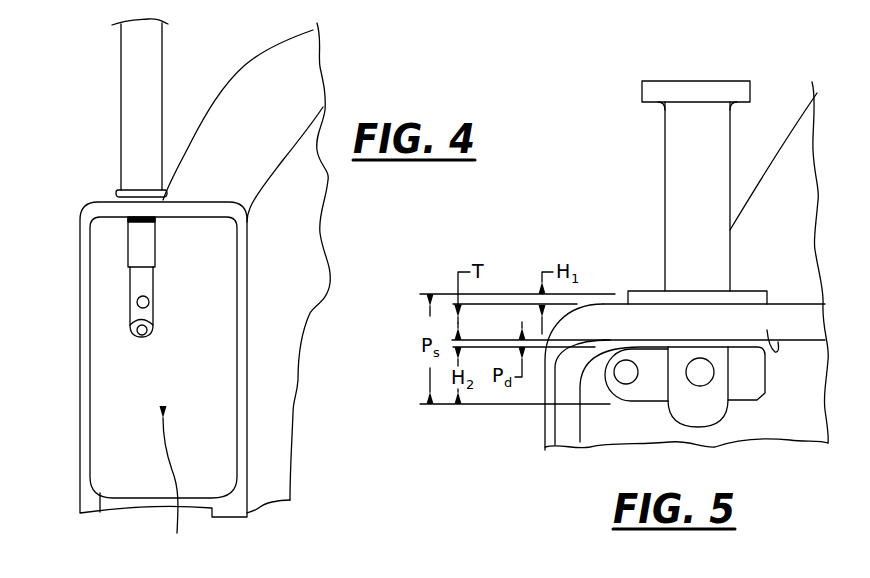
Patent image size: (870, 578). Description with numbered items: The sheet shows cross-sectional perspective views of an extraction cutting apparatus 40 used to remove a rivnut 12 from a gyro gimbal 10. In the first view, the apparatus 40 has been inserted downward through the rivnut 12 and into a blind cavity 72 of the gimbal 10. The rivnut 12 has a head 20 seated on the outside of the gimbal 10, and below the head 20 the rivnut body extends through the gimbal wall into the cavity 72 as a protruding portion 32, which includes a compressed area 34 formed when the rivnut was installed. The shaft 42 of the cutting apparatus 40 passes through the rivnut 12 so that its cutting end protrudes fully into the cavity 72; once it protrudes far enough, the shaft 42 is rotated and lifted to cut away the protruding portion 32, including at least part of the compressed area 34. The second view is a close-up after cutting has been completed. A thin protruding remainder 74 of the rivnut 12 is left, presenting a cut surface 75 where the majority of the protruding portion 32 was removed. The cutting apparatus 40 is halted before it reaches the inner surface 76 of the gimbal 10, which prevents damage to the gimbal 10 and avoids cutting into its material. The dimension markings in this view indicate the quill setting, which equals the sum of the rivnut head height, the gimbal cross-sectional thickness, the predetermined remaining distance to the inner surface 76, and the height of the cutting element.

In FIG. 4, the gyro gimbal 10 is at (250, 63).
In FIG. 5, the gyro gimbal 10 is at (792, 122).
In FIG. 4, the rivnut 12 is at (157, 250).
In FIG. 5, the rivnut 12 is at (628, 293).
In FIG. 4, the head 20 is at (120, 193).
In FIG. 4, the protruding portion 32 is at (130, 242).
In FIG. 4, the compressed area 34 is at (136, 219).
In FIG. 4, the extraction cutting apparatus 40 is at (121, 51).
In FIG. 4, the shaft 42 is at (148, 97).
In FIG. 4, the blind cavity 72 is at (178, 493).
In FIG. 5, the thin protruding remainder 74 is at (657, 344).
In FIG. 5, the cut surface 75 is at (673, 351).
In FIG. 5, the inner surface 76 is at (771, 331).